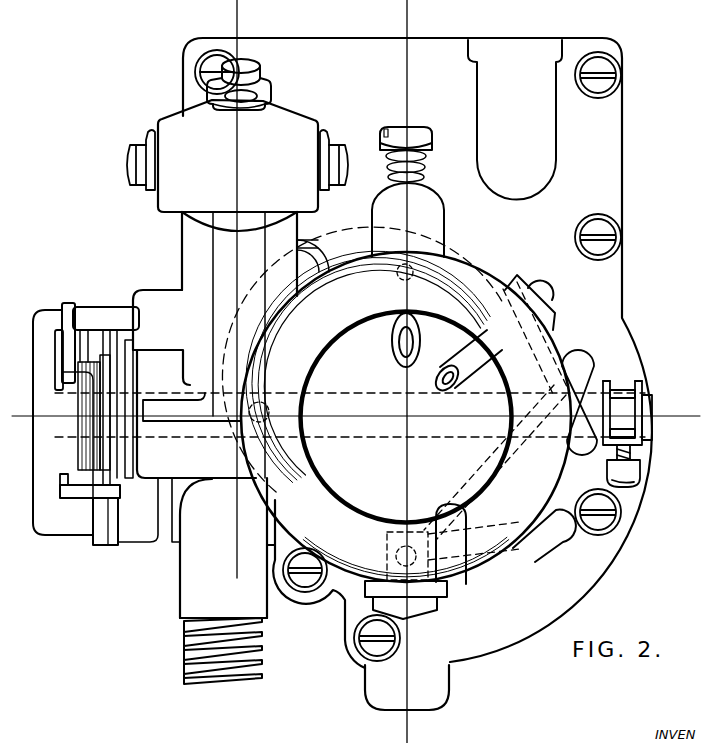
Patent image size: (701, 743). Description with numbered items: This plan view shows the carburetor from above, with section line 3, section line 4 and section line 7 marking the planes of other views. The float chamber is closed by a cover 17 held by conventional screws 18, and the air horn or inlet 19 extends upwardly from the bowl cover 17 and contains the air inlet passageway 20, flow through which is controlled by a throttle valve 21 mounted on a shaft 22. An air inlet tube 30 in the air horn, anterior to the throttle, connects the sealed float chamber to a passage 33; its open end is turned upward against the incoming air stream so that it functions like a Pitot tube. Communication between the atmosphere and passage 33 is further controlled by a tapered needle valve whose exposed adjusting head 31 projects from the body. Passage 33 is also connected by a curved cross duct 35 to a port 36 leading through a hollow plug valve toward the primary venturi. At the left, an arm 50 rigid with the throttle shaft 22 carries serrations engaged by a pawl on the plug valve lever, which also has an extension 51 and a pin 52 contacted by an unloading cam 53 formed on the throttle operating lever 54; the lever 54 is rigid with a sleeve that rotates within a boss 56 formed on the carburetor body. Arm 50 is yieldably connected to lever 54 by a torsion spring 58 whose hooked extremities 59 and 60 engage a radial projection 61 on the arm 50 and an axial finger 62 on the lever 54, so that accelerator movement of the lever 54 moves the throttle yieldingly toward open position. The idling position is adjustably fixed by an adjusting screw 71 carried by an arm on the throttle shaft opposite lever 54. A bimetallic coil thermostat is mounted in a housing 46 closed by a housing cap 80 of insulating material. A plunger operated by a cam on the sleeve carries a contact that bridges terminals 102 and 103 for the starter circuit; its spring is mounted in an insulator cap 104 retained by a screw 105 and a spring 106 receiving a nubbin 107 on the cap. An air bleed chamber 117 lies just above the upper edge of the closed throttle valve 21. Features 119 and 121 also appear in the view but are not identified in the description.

The section line 3- 3 is at (17, 422).
The section line 4- 4 is at (403, 7).
The section line 7- 7 is at (233, 6).
The cover 17 is at (612, 322).
The screws 18 is at (604, 244).
The air horn 19 is at (470, 265).
The air inlet passageway 20 is at (458, 563).
The throttle valve 21 is at (370, 498).
The throttle shaft 22 is at (624, 392).
The air inlet tube 30 is at (392, 358).
The adjusting head 31 is at (413, 131).
The passage 33 is at (410, 262).
The curved cross duct 35 is at (357, 280).
The port 36 is at (303, 414).
The housing 46 is at (127, 545).
The arm 50 is at (60, 372).
The extension 51 is at (65, 340).
The pin 52 is at (96, 305).
The unloading cam 53 is at (130, 374).
The throttle operating lever 54 is at (128, 476).
The boss 56 is at (215, 492).
The torsion spring 58 is at (85, 450).
The hooked extremity 59 is at (62, 480).
The hooked extremity 60 is at (108, 504).
The radial projection 61 is at (68, 505).
The axial finger 62 is at (87, 500).
The adjusting screw 71 is at (632, 470).
The housing cap 80 is at (48, 530).
The terminal 102 is at (148, 130).
The terminal 103 is at (327, 142).
The insulator cap 104 is at (298, 120).
The screw 105 is at (252, 66).
The spring 106 is at (271, 82).
The nubbin 107 is at (257, 97).
The chamber 117 is at (390, 547).
The passage 119 is at (505, 470).
The tube 121 is at (470, 383).